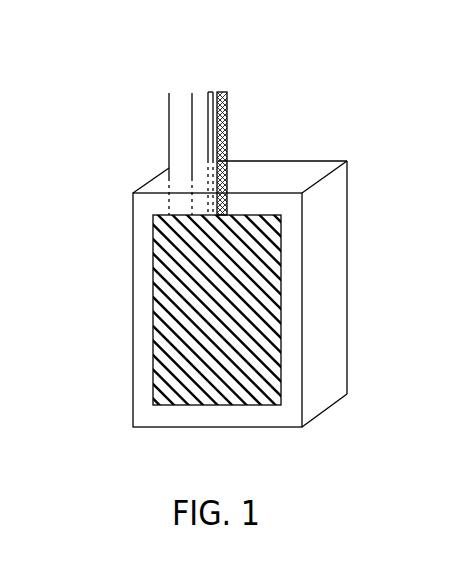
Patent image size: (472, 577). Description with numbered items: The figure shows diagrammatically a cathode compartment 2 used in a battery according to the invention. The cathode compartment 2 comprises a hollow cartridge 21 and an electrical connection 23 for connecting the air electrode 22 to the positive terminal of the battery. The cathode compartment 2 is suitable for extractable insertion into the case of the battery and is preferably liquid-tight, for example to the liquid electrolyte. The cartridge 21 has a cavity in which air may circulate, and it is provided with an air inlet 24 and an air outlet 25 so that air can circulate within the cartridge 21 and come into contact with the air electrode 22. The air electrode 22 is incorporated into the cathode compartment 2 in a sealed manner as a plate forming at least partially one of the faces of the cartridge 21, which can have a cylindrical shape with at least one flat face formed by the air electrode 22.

The cathode compartment 2 is at (139, 86).
The hollow cartridge 21 is at (133, 217).
The air electrode 22 is at (153, 352).
The electrical connection 23 is at (225, 88).
The air inlet 24 is at (206, 85).
The air outlet 25 is at (188, 80).